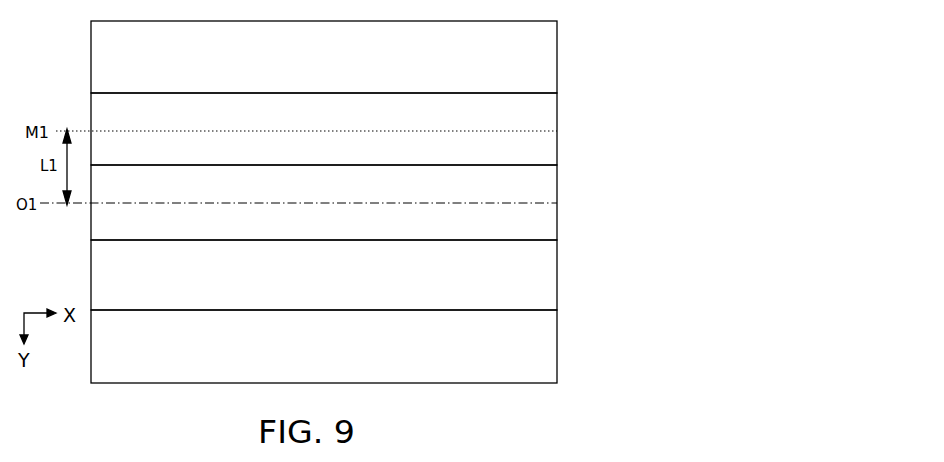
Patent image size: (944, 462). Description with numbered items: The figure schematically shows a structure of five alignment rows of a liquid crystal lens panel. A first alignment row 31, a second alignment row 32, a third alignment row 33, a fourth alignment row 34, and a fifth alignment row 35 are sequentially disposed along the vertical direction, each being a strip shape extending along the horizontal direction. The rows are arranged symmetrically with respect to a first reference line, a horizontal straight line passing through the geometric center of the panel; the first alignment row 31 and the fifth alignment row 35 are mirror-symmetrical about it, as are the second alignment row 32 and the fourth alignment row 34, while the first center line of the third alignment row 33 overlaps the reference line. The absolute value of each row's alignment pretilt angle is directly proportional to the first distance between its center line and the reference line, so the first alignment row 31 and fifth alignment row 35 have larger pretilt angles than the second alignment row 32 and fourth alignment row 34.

The first alignment row 31 is at (542, 50).
The second alignment row 32 is at (542, 135).
The third alignment row 33 is at (542, 216).
The fourth alignment row 34 is at (542, 272).
The fifth alignment row 35 is at (542, 353).